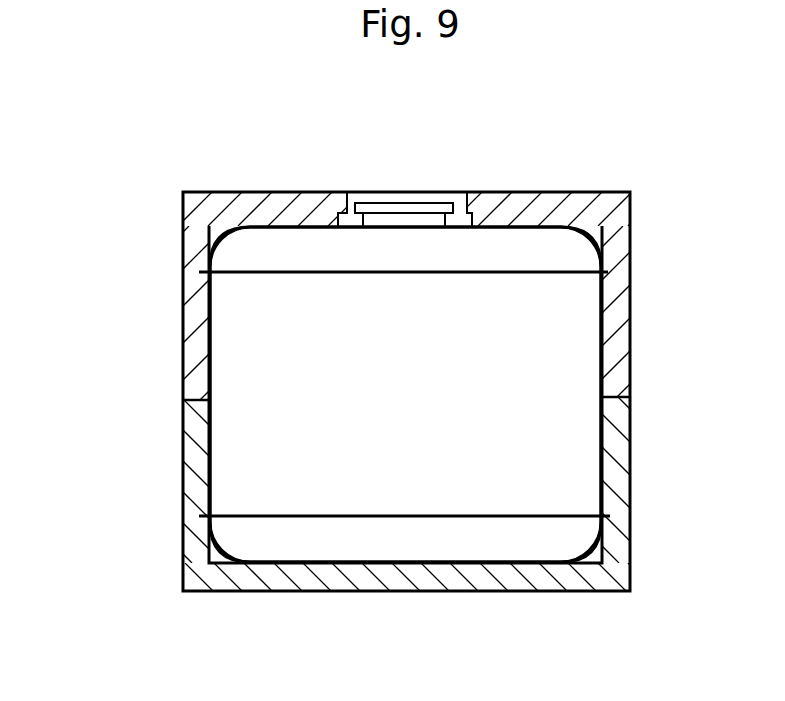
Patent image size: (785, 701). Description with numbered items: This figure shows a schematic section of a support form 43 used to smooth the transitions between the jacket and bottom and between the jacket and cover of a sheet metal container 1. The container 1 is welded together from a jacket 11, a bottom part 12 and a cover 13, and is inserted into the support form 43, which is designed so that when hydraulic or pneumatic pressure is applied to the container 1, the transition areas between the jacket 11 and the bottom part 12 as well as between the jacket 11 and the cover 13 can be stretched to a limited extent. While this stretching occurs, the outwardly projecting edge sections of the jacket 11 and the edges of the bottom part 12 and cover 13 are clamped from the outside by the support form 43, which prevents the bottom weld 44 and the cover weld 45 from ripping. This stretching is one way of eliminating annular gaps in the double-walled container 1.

The sheet metal container 1 is at (577, 330).
The jacket 11 is at (532, 400).
The bottom part 12 is at (463, 537).
The cover 13 is at (515, 240).
The support form 43 is at (188, 322).
The bottom weld 44 is at (337, 516).
The cover weld 45 is at (295, 272).